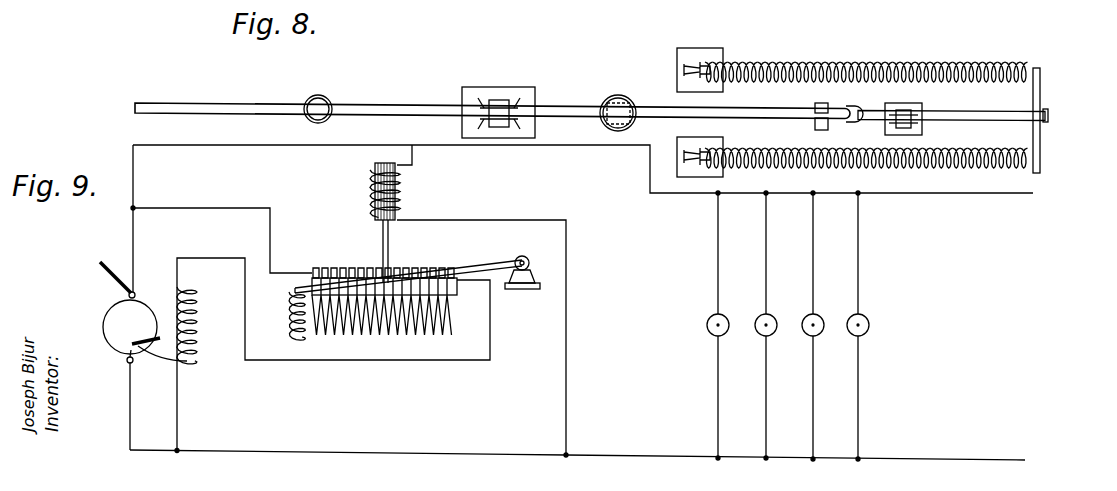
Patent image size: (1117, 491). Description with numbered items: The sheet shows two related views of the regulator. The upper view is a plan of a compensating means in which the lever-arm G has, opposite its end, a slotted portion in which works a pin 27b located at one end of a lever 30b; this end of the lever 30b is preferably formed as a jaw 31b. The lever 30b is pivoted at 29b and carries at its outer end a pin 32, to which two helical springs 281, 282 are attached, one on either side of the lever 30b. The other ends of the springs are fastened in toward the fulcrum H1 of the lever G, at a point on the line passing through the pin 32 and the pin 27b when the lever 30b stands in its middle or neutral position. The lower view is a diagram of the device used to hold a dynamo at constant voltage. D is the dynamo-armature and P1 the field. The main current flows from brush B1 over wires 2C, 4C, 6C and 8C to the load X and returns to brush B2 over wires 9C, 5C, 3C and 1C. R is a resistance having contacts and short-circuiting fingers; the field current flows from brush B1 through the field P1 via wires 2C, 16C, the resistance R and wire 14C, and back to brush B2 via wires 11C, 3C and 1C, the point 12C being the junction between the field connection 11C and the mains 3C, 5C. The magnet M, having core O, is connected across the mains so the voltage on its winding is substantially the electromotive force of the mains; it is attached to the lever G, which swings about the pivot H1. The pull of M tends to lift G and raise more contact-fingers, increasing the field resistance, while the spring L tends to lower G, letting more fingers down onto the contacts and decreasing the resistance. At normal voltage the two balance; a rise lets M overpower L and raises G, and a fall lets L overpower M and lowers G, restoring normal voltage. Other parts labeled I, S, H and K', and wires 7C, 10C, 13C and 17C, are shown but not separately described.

In FIG. 8, the lever-arm G is at (217, 99).
In FIG. 9, the lever-arm G is at (466, 268).
In FIG. 8, the spring L is at (319, 95).
In FIG. 9, the spring L is at (289, 298).
In FIG. 8, the guide box I is at (462, 96).
In FIG. 9, the guide box I is at (528, 289).
In FIG. 8, the fulcrum H1 is at (495, 102).
In FIG. 9, the fulcrum H1 is at (537, 246).
In FIG. 8, the magnet M is at (603, 104).
In FIG. 9, the magnet M is at (372, 181).
In FIG. 8, the core O is at (623, 100).
In FIG. 9, the core O is at (372, 213).
In FIG. 8, the helical spring 281 is at (967, 66).
In FIG. 8, the helical spring 282 is at (970, 170).
In FIG. 8, the pin 27b is at (821, 102).
In FIG. 8, the jaw 31b is at (838, 108).
In FIG. 8, the pivot 29b is at (926, 111).
In FIG. 8, the lever 30b is at (1049, 116).
In FIG. 8, the pin 32 is at (1041, 103).
In FIG. 9, the wire 6C is at (216, 146).
In FIG. 9, the conductor 7C is at (411, 130).
In FIG. 9, the conductor 13C is at (413, 166).
In FIG. 9, the wire 8C is at (716, 194).
In FIG. 9, the wire 4C is at (134, 185).
In FIG. 9, the wire 16C is at (212, 209).
In FIG. 9, the conductor 17C is at (133, 208).
In FIG. 9, the wire 2C is at (134, 248).
In FIG. 9, the brush B1 is at (100, 264).
In FIG. 9, the dynamo-armature D is at (124, 313).
In FIG. 9, the wire 1C is at (128, 398).
In FIG. 9, the wire 3C is at (160, 450).
In FIG. 9, the junction-point 12C is at (562, 455).
In FIG. 9, the wire 5C is at (378, 423).
In FIG. 9, the wire 9C is at (645, 459).
In FIG. 9, the conductor 10C is at (565, 382).
In FIG. 9, the wire 14C is at (504, 331).
In FIG. 9, the wire 11C is at (179, 409).
In FIG. 9, the field P1 is at (198, 316).
In FIG. 9, the brush B2 is at (192, 363).
In FIG. 9, the stem K' is at (398, 251).
In FIG. 9, the resistance R is at (385, 337).
In FIG. 9, the contact segments S is at (344, 274).
In FIG. 9, the contact H is at (370, 274).
In FIG. 9, the load X is at (708, 327).